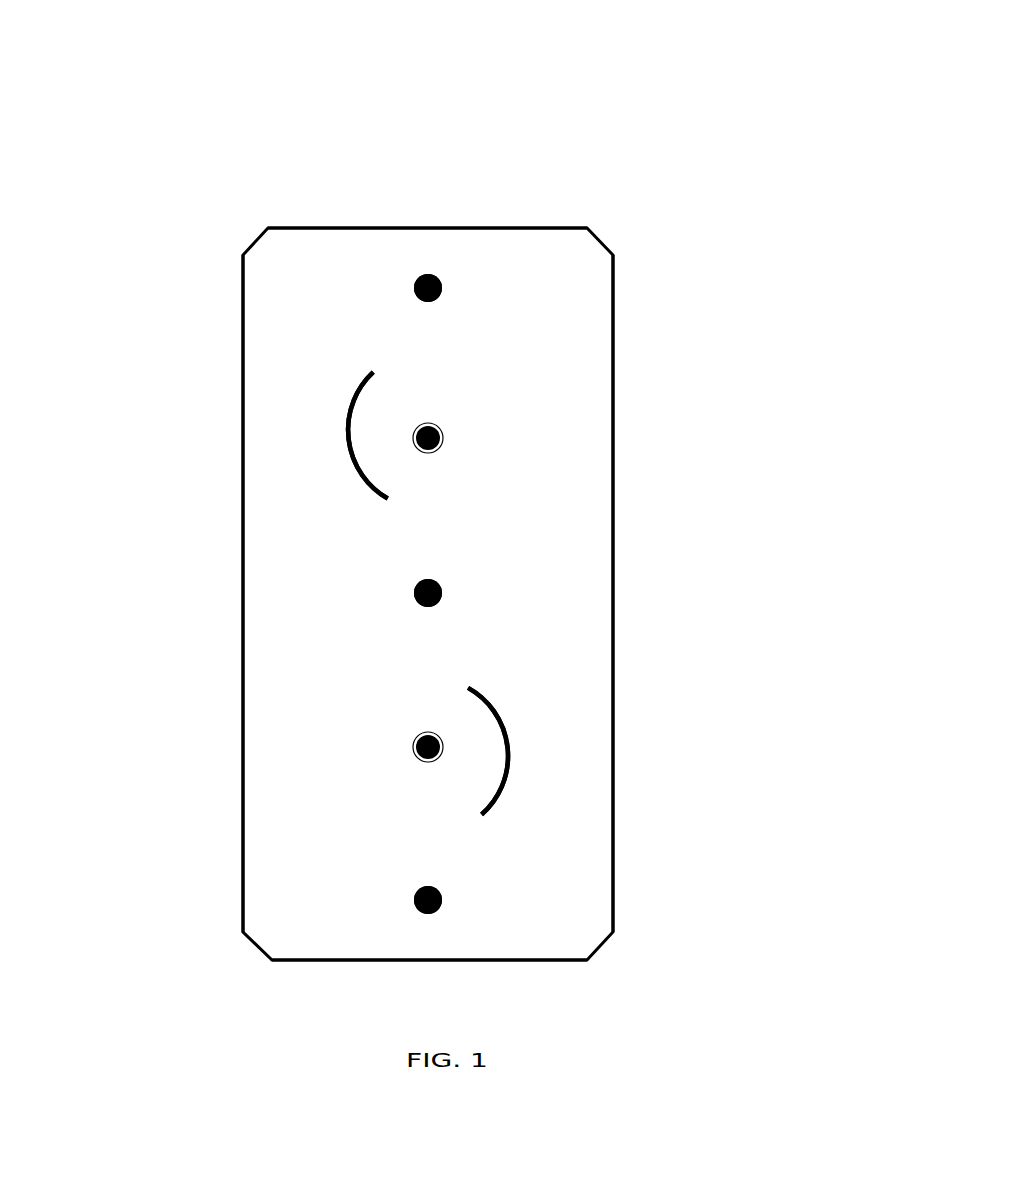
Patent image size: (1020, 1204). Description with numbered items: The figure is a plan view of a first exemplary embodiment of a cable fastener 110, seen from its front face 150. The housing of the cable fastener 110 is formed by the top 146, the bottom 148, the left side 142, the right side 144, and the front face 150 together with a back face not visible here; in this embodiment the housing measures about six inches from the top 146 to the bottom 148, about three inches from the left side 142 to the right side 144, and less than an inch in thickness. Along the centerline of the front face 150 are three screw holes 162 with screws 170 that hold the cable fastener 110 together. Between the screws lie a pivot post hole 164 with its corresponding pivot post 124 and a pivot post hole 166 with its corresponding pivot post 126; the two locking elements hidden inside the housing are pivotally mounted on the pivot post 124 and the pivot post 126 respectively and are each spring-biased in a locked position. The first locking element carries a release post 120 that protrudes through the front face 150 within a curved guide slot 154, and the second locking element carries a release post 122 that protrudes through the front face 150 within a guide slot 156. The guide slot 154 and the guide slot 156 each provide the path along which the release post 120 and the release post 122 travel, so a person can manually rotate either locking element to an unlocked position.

The cable fastener 110 is at (222, 228).
The release post 120 is at (353, 472).
The release post 122 is at (493, 697).
The pivot post 124 is at (441, 428).
The pivot post 126 is at (415, 752).
The left side 142 is at (240, 377).
The right side 144 is at (614, 387).
The top 146 is at (377, 228).
The bottom 148 is at (405, 960).
The front face 150 is at (283, 318).
The guide slot 154 is at (345, 422).
The guide slot 156 is at (508, 753).
The screw holes 162 is at (422, 278).
The pivot post hole 164 is at (443, 442).
The pivot post hole 166 is at (415, 745).
The screws 170 is at (441, 274).